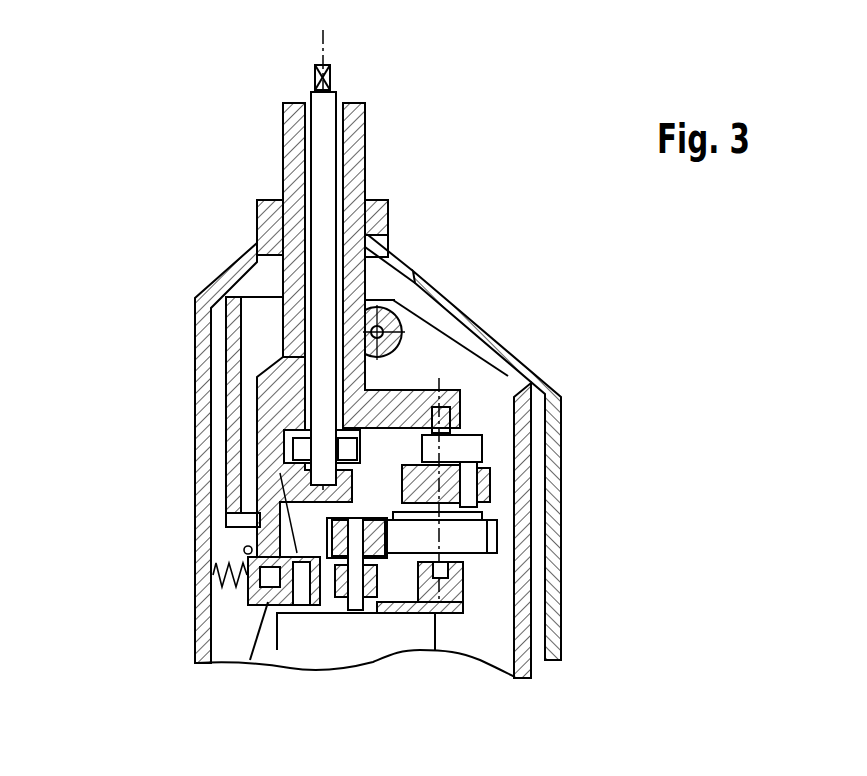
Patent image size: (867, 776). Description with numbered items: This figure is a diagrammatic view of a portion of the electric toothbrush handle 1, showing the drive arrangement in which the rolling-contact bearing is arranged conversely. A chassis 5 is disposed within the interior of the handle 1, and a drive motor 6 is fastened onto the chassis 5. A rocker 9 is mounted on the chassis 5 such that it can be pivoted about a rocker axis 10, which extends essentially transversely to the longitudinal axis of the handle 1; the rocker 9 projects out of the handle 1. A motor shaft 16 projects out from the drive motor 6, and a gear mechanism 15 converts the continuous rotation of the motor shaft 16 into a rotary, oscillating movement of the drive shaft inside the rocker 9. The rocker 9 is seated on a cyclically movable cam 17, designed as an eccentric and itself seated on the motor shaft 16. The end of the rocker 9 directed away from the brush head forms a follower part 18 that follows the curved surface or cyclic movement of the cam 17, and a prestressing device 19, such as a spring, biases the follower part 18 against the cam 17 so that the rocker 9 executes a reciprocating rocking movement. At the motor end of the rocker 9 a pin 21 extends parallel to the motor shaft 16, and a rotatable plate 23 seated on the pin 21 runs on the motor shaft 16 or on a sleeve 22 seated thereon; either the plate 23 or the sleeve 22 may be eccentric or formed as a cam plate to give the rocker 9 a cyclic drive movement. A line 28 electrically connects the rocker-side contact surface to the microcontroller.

The handle 1 is at (570, 397).
The chassis 5 is at (520, 485).
The drive motor 6 is at (413, 633).
The rocker 9 is at (265, 515).
The rocker axis 10 is at (394, 301).
The gear mechanism 15 is at (472, 427).
The motor shaft 16 is at (357, 612).
The cam 17 is at (334, 620).
The follower part 18 is at (235, 615).
The prestressing device 19 is at (198, 566).
The pin 21 is at (280, 473).
The sleeve 22 is at (377, 582).
The plate 23 is at (247, 596).
The line 28 is at (243, 644).